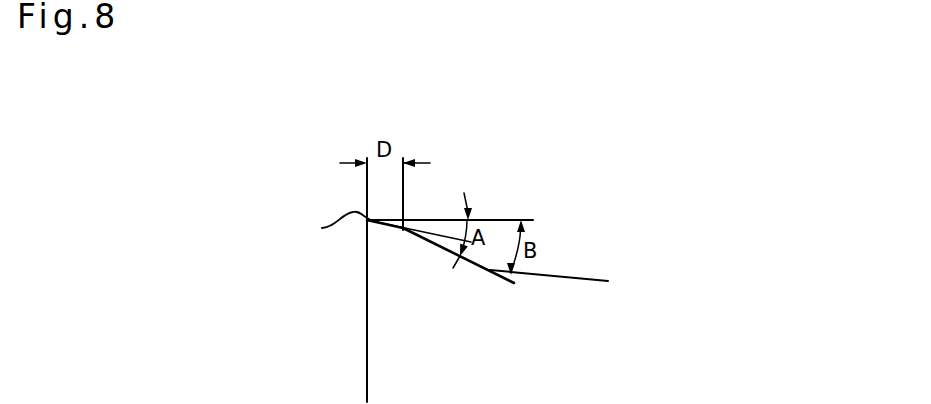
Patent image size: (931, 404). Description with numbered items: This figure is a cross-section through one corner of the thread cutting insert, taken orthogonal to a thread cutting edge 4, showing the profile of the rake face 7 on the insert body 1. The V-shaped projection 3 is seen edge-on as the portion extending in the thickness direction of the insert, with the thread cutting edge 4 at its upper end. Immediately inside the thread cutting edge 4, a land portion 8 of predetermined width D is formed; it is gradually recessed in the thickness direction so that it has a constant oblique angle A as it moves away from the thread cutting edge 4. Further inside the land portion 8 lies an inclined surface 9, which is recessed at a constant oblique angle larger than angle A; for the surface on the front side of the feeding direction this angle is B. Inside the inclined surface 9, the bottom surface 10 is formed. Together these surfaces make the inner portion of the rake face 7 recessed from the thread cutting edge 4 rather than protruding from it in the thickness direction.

The insert body 1 is at (443, 357).
The V-shaped projection 3 is at (352, 336).
The thread cutting edge 4 is at (322, 228).
The rake face 7 is at (528, 130).
The land portion 8 is at (388, 218).
The inclined surface 9 is at (427, 233).
The bottom surface 10 is at (558, 276).